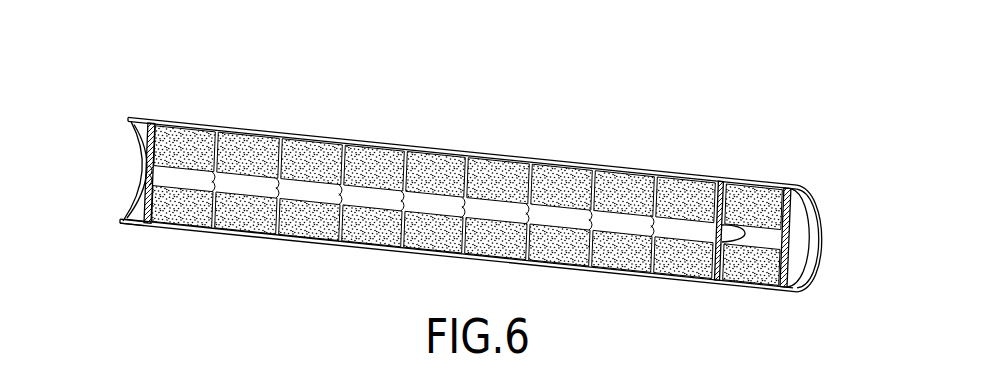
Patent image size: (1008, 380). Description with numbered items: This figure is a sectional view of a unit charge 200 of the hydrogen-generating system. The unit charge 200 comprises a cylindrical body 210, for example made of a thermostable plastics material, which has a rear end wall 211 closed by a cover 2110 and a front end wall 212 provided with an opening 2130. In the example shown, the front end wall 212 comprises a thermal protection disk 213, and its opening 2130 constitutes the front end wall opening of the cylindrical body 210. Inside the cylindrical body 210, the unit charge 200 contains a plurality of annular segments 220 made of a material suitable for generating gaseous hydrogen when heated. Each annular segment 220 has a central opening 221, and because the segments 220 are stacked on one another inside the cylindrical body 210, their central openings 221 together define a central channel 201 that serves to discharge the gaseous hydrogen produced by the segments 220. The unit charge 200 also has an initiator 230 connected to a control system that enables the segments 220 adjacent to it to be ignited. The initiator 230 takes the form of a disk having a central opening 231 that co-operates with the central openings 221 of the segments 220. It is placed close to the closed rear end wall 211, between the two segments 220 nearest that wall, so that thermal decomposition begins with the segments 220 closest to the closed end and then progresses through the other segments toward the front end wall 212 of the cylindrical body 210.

The unit charge 200 is at (527, 135).
The central channel 201 is at (253, 183).
The cylindrical body 210 is at (437, 148).
The rear end wall 211 is at (798, 184).
The cover 2110 is at (800, 242).
The front end wall 212 is at (130, 212).
The thermal protection disk 213 is at (143, 134).
The opening 2130 is at (145, 168).
The annular segments 220 is at (250, 243).
The central opening 221 is at (192, 122).
The initiator 230 is at (720, 178).
The central opening 231 is at (753, 227).